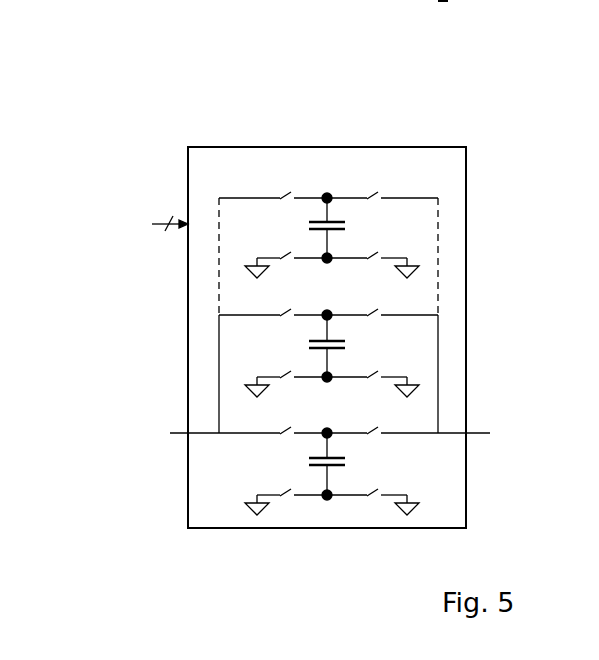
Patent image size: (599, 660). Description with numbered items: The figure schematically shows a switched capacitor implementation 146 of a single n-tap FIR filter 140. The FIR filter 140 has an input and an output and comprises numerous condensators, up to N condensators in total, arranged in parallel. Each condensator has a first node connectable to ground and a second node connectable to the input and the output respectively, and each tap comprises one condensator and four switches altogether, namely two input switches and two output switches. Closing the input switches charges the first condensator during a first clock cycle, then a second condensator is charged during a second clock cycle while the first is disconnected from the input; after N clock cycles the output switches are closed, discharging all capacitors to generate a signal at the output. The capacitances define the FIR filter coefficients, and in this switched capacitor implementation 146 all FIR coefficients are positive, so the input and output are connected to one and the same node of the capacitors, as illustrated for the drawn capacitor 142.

The n-tap FIR filter 140 is at (298, 110).
The switched capacitor implementation 146 is at (217, 168).
The capacitor C0 142 is at (340, 468).